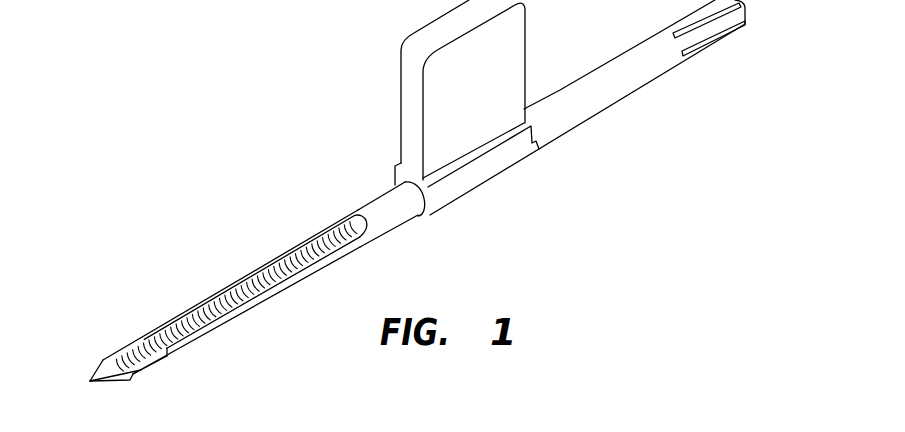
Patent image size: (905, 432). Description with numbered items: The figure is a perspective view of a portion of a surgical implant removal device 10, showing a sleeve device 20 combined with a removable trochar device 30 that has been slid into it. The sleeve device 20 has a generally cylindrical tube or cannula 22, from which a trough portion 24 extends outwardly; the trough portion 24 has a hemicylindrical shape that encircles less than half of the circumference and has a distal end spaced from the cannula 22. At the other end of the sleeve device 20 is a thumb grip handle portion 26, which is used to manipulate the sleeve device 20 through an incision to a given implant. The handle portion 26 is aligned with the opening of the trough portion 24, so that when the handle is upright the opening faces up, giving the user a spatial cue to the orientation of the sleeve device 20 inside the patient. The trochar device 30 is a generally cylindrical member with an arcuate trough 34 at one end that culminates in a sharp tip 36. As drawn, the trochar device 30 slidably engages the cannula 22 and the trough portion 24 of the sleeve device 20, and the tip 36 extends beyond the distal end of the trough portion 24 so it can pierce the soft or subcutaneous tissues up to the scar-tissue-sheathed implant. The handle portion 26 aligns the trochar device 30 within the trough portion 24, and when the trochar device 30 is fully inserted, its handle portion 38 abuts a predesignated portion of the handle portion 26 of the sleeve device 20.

The surgical implant removal device 10 is at (223, 112).
The sleeve device 20 is at (383, 236).
The cannula 22 is at (375, 201).
The trough portion 24 is at (227, 314).
The thumb grip handle portion 26 is at (524, 27).
The trochar device 30 is at (95, 360).
The arcuate trough 34 is at (140, 371).
The sharp tip 36 is at (92, 383).
The handle portion 38 is at (588, 103).